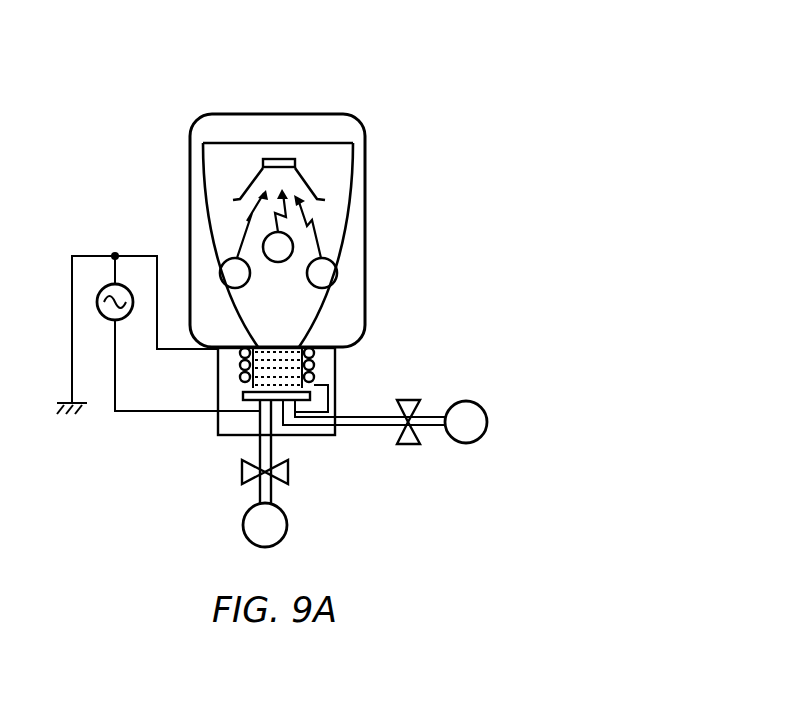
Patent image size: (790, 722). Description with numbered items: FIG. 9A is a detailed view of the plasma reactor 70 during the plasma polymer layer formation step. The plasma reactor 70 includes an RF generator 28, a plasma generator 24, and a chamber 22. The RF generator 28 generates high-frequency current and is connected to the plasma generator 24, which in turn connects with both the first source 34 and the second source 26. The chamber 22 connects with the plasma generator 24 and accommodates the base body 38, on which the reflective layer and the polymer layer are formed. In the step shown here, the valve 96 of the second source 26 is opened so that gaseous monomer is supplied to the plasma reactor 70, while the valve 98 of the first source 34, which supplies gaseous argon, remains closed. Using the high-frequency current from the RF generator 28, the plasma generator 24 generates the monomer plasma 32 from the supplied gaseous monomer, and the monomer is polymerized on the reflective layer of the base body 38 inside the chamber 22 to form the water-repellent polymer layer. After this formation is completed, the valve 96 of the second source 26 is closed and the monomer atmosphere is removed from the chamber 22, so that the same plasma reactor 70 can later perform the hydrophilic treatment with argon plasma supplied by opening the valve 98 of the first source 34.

The plasma reactor 70 is at (471, 30).
The chamber 22 is at (365, 168).
The base body 38 is at (305, 172).
The monomer plasma 32 is at (337, 268).
The plasma generator 24 is at (314, 355).
The RF generator 28 is at (127, 317).
The valve 96 is at (242, 464).
The second source 26 is at (287, 523).
The valve 98 is at (412, 400).
The first source 34 is at (468, 400).